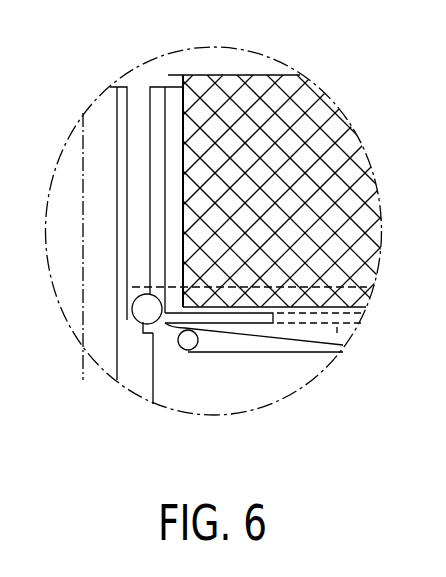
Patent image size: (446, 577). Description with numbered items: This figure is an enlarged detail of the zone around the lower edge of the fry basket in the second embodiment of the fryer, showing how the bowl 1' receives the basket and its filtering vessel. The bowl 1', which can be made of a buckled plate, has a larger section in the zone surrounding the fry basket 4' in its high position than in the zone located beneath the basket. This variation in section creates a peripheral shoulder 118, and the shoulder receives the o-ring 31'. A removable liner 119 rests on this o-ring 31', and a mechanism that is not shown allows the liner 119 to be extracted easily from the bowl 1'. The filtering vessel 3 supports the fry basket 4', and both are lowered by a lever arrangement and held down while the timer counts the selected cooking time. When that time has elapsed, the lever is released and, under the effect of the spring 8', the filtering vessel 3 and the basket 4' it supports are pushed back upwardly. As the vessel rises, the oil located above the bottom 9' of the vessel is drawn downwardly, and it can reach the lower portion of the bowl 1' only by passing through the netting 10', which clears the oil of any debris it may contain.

The filtering vessel 3 is at (163, 105).
The fry basket 4' is at (223, 166).
The removable liner 119 is at (150, 207).
The o-ring 31' is at (88, 318).
The peripheral shoulder 118 is at (138, 323).
The bowl 1' is at (138, 389).
The spring 8' is at (192, 400).
The bottom 9' is at (259, 370).
The netting 10' is at (304, 364).